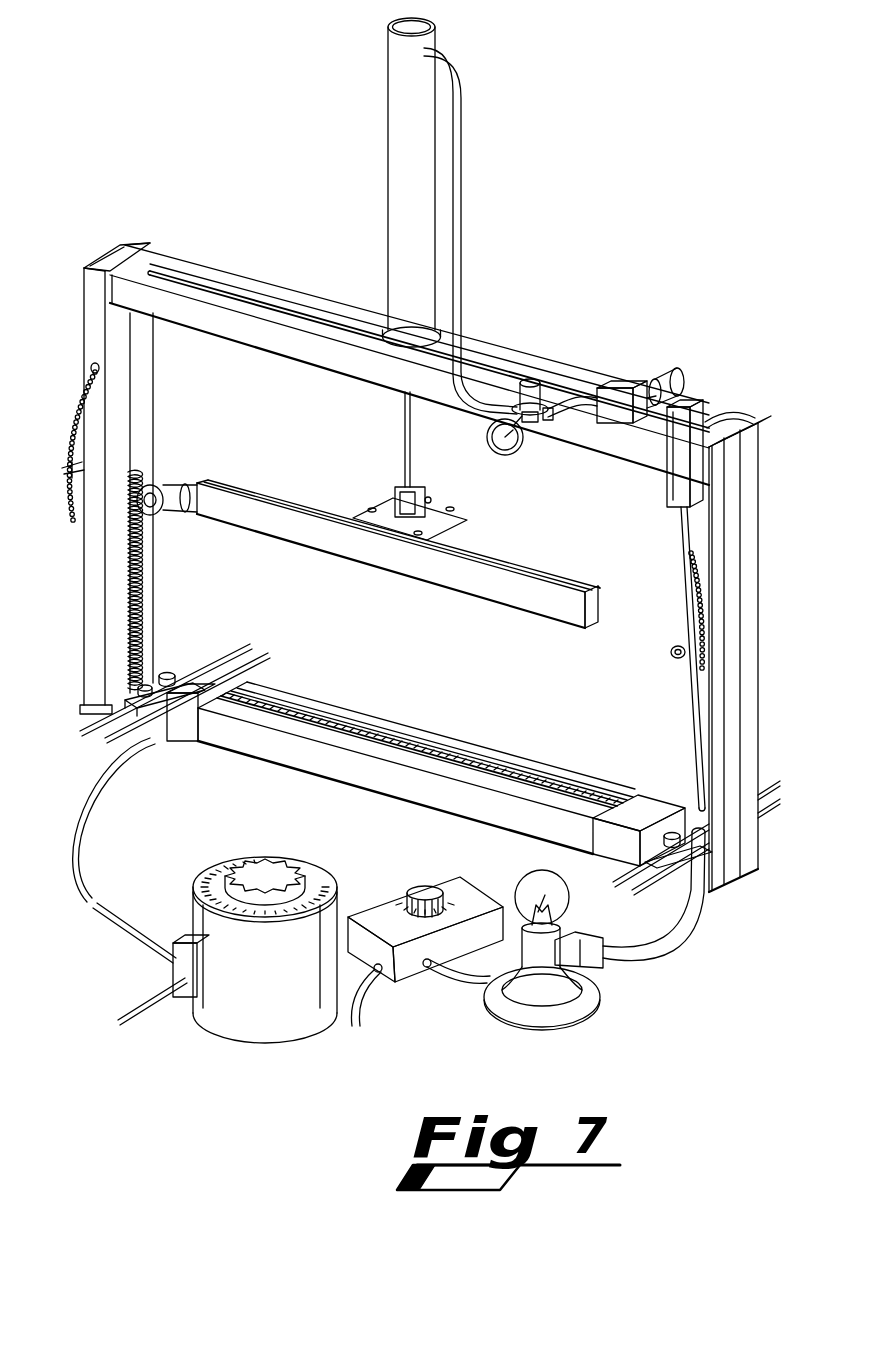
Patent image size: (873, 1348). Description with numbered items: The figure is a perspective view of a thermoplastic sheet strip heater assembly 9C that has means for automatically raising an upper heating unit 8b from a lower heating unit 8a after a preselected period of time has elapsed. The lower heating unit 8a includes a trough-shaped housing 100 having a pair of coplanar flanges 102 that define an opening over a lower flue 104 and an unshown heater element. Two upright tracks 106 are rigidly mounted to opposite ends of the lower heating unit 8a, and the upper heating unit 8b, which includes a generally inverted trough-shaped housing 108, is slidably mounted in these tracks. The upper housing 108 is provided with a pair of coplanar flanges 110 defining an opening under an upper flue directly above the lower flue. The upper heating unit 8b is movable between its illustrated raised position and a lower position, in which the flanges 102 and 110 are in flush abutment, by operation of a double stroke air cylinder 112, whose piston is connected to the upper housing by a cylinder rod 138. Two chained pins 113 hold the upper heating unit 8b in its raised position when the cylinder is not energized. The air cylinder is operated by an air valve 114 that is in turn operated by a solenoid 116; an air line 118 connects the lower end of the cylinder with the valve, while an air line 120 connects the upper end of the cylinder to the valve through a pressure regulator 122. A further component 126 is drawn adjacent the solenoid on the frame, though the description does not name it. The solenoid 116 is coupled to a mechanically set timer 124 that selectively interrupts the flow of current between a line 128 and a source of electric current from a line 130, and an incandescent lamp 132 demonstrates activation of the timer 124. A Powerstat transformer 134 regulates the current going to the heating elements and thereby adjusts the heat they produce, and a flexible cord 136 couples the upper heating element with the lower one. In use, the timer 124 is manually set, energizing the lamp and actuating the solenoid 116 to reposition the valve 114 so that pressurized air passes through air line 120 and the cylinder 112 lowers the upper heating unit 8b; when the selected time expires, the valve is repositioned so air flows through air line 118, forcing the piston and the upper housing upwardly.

The trough-shaped housing 100 is at (255, 752).
The coplanar flanges 102 is at (518, 792).
The lower flue 104 is at (375, 732).
The upright tracks 106 is at (92, 578).
The inverted trough-shaped housing 108 is at (345, 552).
The coplanar flanges 110 is at (520, 625).
The double stroke air cylinder 112 is at (398, 222).
The chained pins 113 is at (78, 444).
The air valve 114 is at (652, 378).
The solenoid 116 is at (618, 416).
The air line 118 is at (504, 348).
The air line 120 is at (458, 152).
The pressure regulator 122 is at (534, 388).
The mechanically set timer 124 is at (380, 906).
The switch block 126 is at (670, 489).
The line 128 is at (648, 968).
The line 130 is at (368, 1001).
The incandescent lamp 132 is at (535, 882).
The controller 134 is at (200, 885).
The flexible cord 136 is at (128, 612).
The cylinder rod 138 is at (403, 446).
The thermoplastic sheet strip heater assembly 9C is at (260, 147).
The lower heating unit 8a is at (262, 638).
The upper heating unit 8b is at (232, 426).